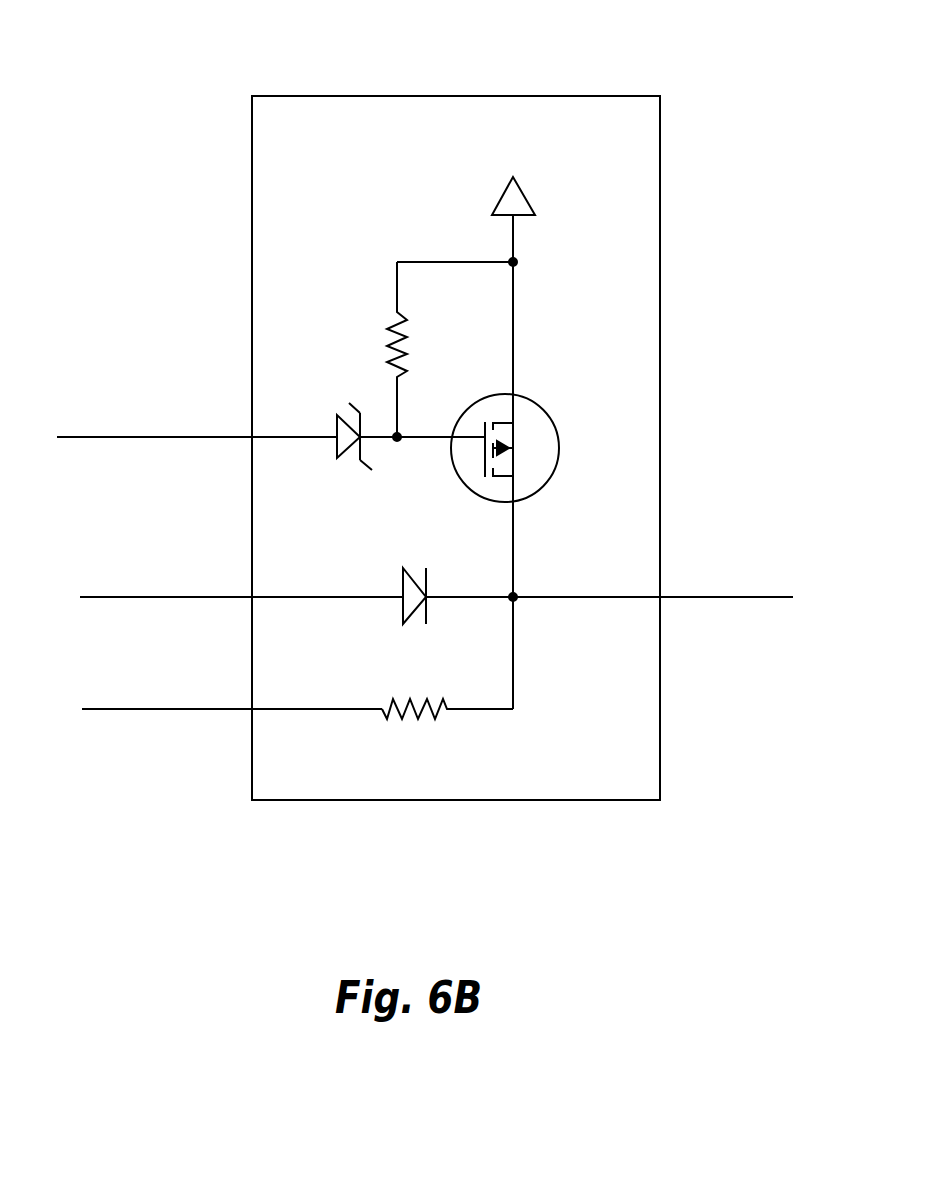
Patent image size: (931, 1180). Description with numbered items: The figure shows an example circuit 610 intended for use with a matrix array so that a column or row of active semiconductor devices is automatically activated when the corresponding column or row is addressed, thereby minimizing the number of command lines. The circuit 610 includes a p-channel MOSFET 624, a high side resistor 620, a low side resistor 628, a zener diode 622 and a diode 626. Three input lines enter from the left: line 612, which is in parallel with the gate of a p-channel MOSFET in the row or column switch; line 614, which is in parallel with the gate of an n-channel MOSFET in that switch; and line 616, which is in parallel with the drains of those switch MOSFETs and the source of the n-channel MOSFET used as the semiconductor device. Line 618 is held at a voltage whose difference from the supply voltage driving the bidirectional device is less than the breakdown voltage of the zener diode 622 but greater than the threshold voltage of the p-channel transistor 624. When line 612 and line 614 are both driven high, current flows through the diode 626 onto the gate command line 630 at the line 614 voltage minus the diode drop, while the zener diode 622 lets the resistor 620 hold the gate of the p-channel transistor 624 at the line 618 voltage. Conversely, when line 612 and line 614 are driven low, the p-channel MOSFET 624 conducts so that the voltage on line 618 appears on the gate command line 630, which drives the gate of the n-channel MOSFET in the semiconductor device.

The circuit 610 is at (295, 96).
The line 612 is at (104, 440).
The line 614 is at (140, 600).
The line 616 is at (120, 712).
The line 618 is at (523, 191).
The high side resistor 620 is at (386, 348).
The zener diode 622 is at (337, 424).
The p-channel MOSFET 624 is at (558, 433).
The diode 626 is at (401, 580).
The low side resistor 628 is at (393, 718).
The gate command line 630 is at (752, 600).